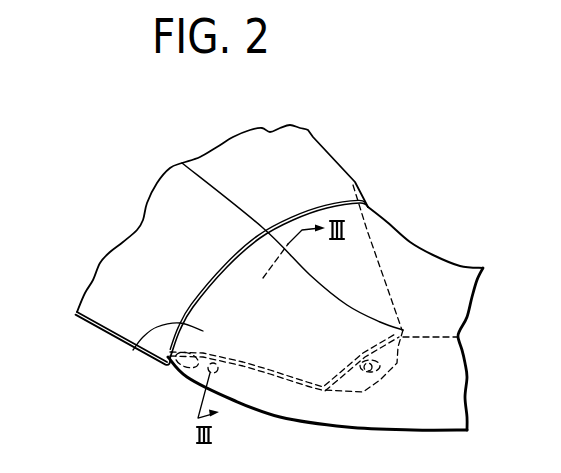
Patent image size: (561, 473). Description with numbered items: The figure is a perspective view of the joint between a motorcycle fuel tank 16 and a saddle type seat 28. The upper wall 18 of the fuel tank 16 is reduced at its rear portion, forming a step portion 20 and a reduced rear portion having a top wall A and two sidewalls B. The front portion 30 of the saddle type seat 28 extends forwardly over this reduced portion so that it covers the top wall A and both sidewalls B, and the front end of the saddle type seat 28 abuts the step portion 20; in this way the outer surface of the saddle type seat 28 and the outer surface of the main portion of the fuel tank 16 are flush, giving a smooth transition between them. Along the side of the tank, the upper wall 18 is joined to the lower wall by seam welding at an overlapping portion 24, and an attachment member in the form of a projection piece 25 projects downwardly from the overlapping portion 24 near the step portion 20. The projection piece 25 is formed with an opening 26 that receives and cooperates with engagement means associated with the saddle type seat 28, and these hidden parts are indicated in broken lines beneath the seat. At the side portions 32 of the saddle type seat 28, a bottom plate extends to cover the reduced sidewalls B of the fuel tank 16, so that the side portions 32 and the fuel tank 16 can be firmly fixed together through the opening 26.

The fuel tank 16 is at (323, 122).
The upper wall 18 is at (141, 230).
The step portion 20 is at (370, 204).
The overlapping portion 24 is at (93, 328).
The projection piece 25 is at (185, 370).
The opening 26 is at (223, 378).
The saddle type seat 28 is at (453, 275).
The front portion 30 is at (352, 203).
The side portion 32 is at (133, 350).
The top wall A is at (362, 265).
The sidewalls B is at (247, 355).